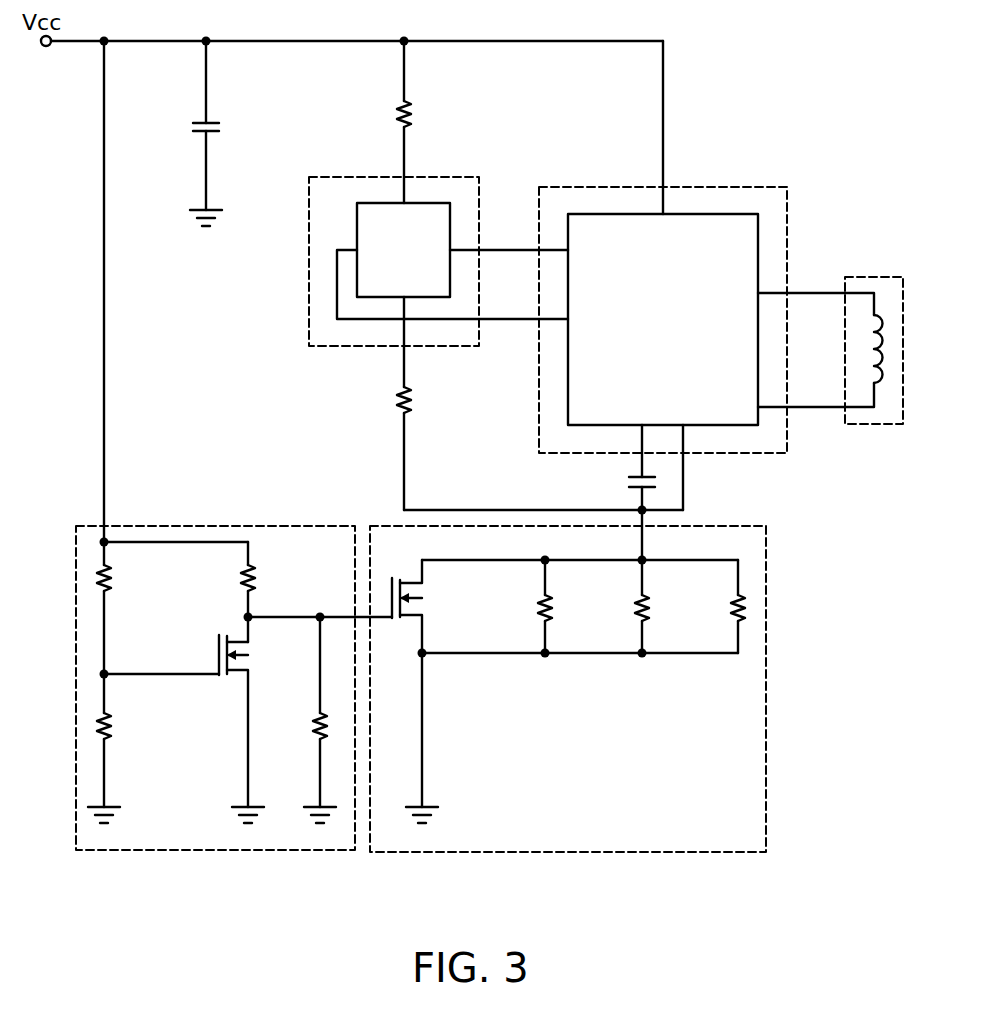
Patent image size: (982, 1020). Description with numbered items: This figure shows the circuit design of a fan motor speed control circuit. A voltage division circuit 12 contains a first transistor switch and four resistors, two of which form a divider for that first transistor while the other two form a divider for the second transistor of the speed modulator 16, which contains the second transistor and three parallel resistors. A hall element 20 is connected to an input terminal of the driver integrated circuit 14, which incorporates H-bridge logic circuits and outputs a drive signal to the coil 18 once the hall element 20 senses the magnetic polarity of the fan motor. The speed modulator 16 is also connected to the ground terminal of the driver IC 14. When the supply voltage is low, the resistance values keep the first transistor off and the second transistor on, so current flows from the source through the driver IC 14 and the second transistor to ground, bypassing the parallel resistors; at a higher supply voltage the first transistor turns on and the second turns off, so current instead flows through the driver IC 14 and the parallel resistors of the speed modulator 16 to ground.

The voltage division circuit 12 is at (243, 526).
The driver integrated circuit 14 is at (700, 187).
The speed modulator 16 is at (766, 577).
The coil 18 is at (872, 277).
The hall element 20 is at (364, 177).